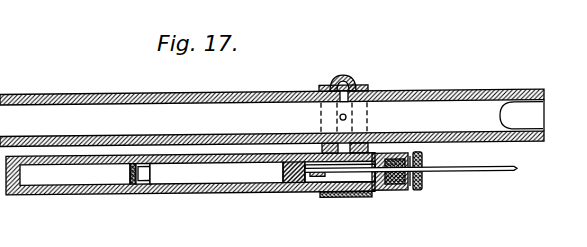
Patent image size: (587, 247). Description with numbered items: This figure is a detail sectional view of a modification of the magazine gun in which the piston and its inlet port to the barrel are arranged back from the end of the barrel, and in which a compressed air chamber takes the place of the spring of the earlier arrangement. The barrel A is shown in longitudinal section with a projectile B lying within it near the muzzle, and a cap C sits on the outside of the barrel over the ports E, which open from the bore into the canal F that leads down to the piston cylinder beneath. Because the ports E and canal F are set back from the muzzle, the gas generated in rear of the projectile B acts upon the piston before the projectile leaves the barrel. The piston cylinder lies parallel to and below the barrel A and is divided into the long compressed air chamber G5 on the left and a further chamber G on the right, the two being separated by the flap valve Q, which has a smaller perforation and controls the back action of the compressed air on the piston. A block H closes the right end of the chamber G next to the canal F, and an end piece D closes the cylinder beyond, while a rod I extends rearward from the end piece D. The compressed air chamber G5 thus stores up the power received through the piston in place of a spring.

The barrel A is at (272, 117).
The cartridge / bullet B is at (521, 115).
The sight cap C is at (358, 89).
The nut / end piece D is at (367, 194).
The ports E is at (346, 120).
The canal F is at (343, 148).
The magazine tube chamber G is at (222, 180).
The compressed air chamber G5 is at (77, 171).
The block / stop H is at (290, 187).
The rod I is at (455, 174).
The flap valve Q is at (128, 194).